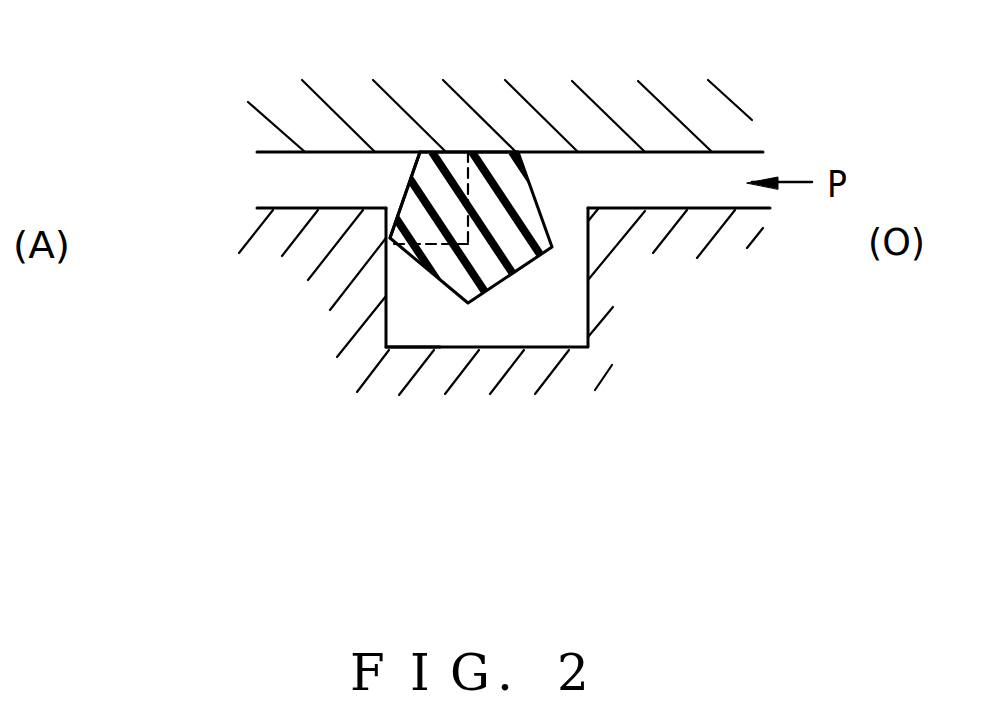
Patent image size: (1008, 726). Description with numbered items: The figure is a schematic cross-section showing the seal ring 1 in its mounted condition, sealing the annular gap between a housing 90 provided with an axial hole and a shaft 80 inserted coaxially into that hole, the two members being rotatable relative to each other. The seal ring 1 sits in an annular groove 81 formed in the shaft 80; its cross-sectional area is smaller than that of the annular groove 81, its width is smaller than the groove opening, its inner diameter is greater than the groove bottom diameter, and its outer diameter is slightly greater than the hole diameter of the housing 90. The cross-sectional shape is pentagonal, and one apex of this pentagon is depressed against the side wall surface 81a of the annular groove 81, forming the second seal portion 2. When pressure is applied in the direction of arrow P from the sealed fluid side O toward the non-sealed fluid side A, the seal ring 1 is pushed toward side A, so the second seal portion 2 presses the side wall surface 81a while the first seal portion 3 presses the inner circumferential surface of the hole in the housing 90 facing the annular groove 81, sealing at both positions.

The seal ring 1 is at (560, 183).
The second seal portion 2 is at (387, 248).
The first seal portion 3 is at (485, 152).
The shaft 80 is at (268, 207).
The annular groove 81 is at (517, 330).
The side wall surface 81a is at (390, 318).
The housing 90 is at (270, 152).